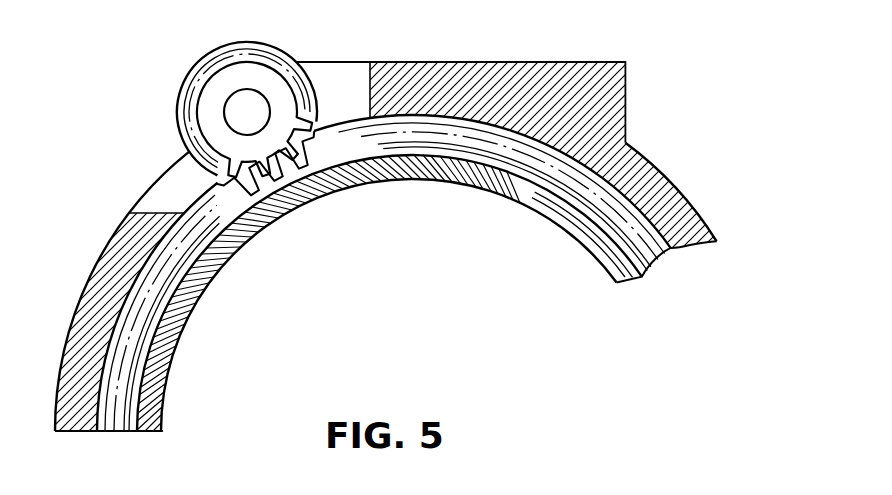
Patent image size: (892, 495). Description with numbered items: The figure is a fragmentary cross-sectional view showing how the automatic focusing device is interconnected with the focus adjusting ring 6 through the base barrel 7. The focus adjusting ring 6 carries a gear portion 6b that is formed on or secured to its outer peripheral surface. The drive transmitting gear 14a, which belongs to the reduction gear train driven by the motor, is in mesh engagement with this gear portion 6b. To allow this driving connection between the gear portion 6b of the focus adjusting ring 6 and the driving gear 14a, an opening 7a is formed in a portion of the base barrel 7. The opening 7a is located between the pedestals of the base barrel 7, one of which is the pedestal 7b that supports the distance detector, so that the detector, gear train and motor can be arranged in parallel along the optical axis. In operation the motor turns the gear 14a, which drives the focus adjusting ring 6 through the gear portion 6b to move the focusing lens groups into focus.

The base barrel 7 is at (647, 168).
The opening 7a is at (348, 75).
The pedestal 7b is at (507, 63).
The focus adjusting ring 6 is at (583, 235).
The gear portion 6b is at (222, 183).
The drive transmitting gear 14a is at (212, 82).